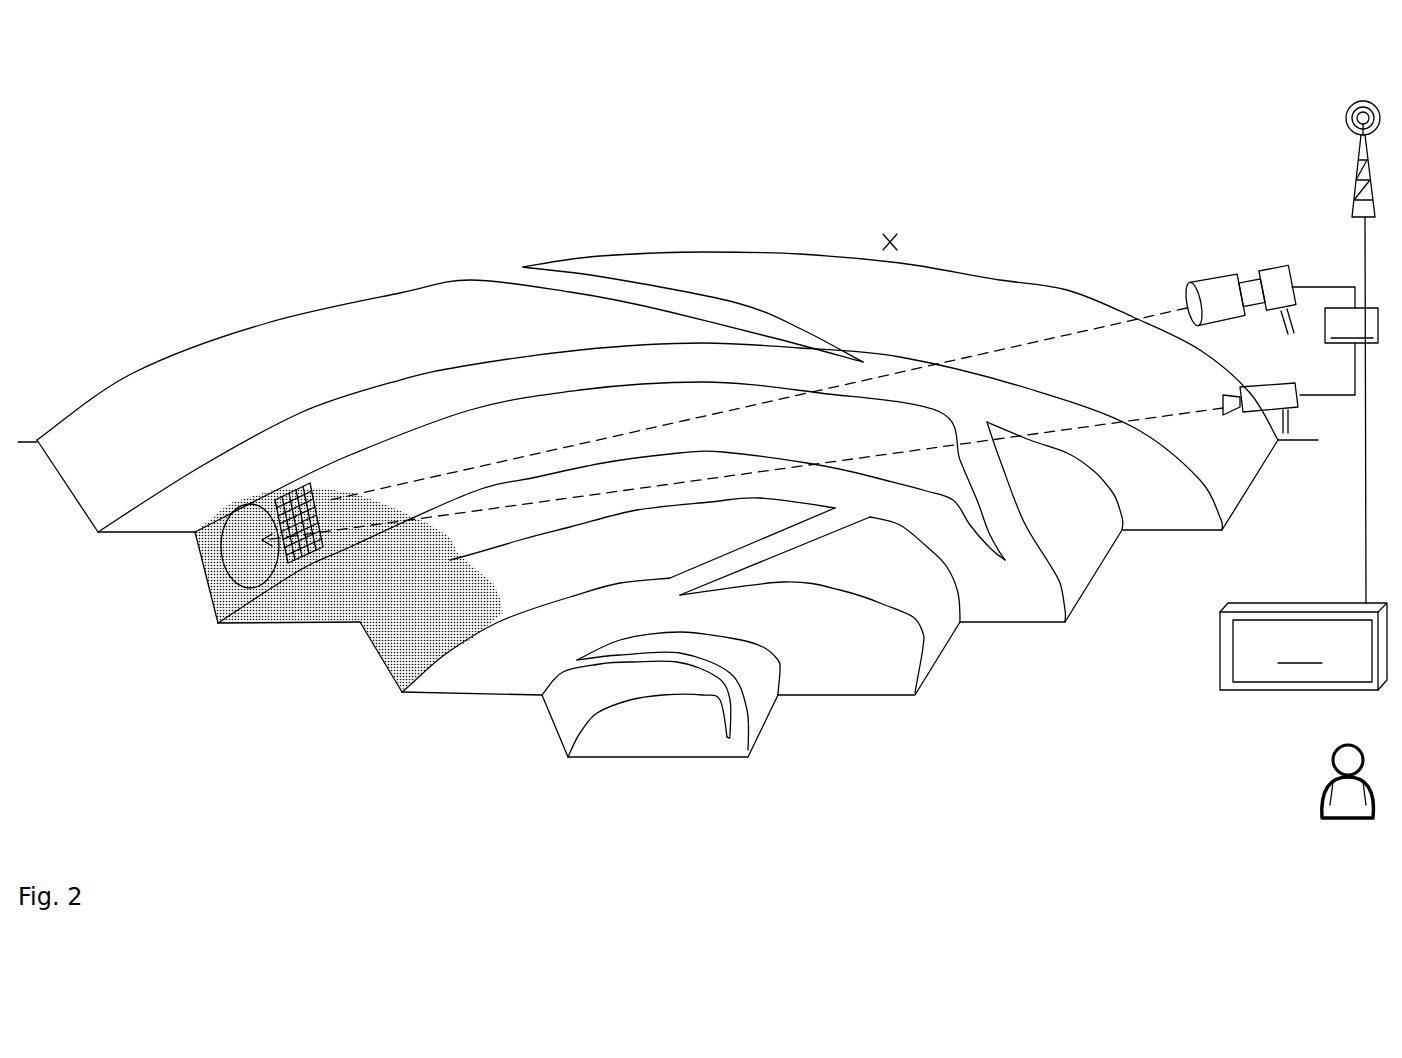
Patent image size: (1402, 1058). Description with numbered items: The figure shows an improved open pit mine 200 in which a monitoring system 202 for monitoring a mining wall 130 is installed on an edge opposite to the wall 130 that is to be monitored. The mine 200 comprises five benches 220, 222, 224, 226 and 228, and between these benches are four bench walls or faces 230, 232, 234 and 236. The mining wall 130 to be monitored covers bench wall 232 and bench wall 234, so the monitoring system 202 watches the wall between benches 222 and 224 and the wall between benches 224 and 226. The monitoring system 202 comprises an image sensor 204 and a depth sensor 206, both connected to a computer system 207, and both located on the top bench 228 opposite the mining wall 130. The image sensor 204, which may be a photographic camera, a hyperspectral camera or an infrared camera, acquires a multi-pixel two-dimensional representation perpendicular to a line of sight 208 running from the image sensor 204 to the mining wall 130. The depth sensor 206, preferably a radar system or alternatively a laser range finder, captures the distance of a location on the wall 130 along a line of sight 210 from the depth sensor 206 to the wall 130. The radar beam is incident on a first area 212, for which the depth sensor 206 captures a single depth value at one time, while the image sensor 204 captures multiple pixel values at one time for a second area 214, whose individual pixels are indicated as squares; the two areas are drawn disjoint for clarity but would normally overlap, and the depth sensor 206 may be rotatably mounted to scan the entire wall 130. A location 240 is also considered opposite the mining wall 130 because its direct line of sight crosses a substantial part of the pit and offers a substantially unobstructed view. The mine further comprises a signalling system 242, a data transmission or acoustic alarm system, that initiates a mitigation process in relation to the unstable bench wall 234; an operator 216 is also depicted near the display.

The open pit mine 200 is at (148, 94).
The monitoring system 202 is at (1265, 228).
The image sensor 204 is at (1282, 266).
The depth sensor 206 is at (1273, 384).
The computer system 207 is at (1339, 351).
The line of sight 208 is at (1007, 349).
The line of sight 210 is at (1153, 415).
The first area 212 is at (232, 505).
The second area 214 is at (325, 489).
The operator 216 is at (1333, 759).
The bench 220 is at (592, 760).
The bench 222 is at (483, 697).
The bench 224 is at (288, 626).
The bench 226 is at (100, 535).
The top bench 228 is at (31, 446).
The bench wall 230 is at (549, 720).
The bench wall 232 is at (386, 676).
The bench wall 234 is at (211, 610).
The bench wall 236 is at (66, 497).
The location 240 is at (896, 243).
The signalling system 242 is at (1360, 162).
The mining wall 130 is at (213, 557).